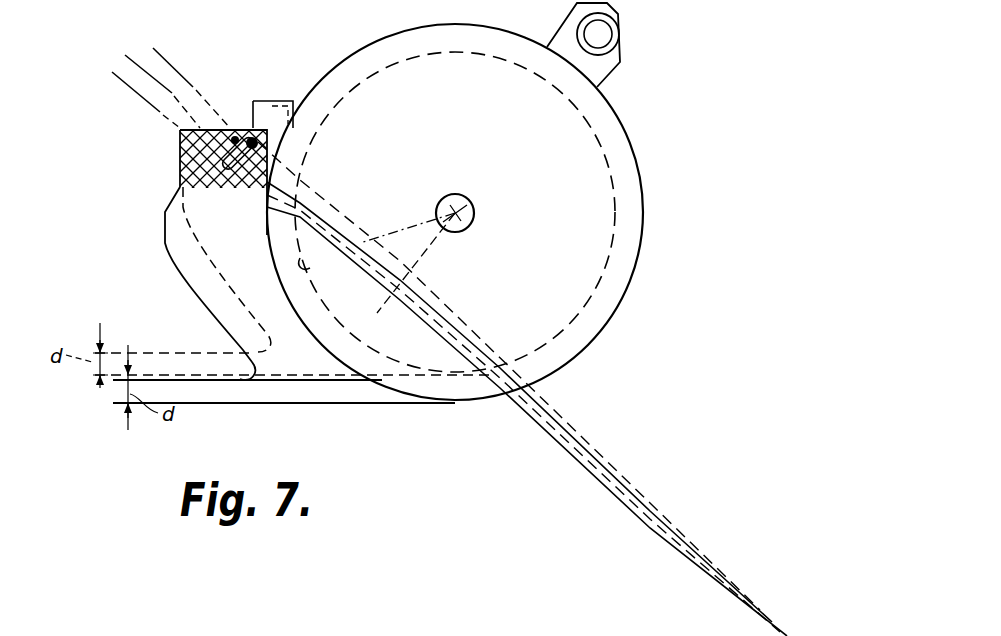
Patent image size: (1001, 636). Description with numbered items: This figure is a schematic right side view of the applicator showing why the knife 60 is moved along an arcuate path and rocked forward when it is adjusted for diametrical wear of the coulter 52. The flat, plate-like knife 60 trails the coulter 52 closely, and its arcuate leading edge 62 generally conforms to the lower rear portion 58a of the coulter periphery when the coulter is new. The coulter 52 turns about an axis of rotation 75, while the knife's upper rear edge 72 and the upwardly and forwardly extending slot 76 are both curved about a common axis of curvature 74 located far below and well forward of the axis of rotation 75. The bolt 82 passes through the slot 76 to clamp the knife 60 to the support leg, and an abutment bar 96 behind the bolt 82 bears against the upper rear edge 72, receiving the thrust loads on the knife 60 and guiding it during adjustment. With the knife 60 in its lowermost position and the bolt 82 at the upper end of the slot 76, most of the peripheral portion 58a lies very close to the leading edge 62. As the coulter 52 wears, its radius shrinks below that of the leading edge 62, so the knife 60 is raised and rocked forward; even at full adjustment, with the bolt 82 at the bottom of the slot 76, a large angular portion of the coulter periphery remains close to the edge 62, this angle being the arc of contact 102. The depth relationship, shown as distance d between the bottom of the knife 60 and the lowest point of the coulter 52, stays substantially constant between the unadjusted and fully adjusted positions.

The coulter 52 is at (645, 160).
The lower rear portion of the peripheral edge 58a is at (345, 226).
The applicator knife 60 is at (163, 248).
The arcuate leading edge 62 is at (333, 222).
The upper rear edge 72 is at (177, 195).
The axis of curvature 74 is at (846, 631).
The axis of rotation 75 is at (473, 208).
The slot 76 is at (234, 137).
The bolt 82 is at (251, 128).
The abutment bar 96 is at (181, 153).
The arc of contact 102 is at (333, 281).